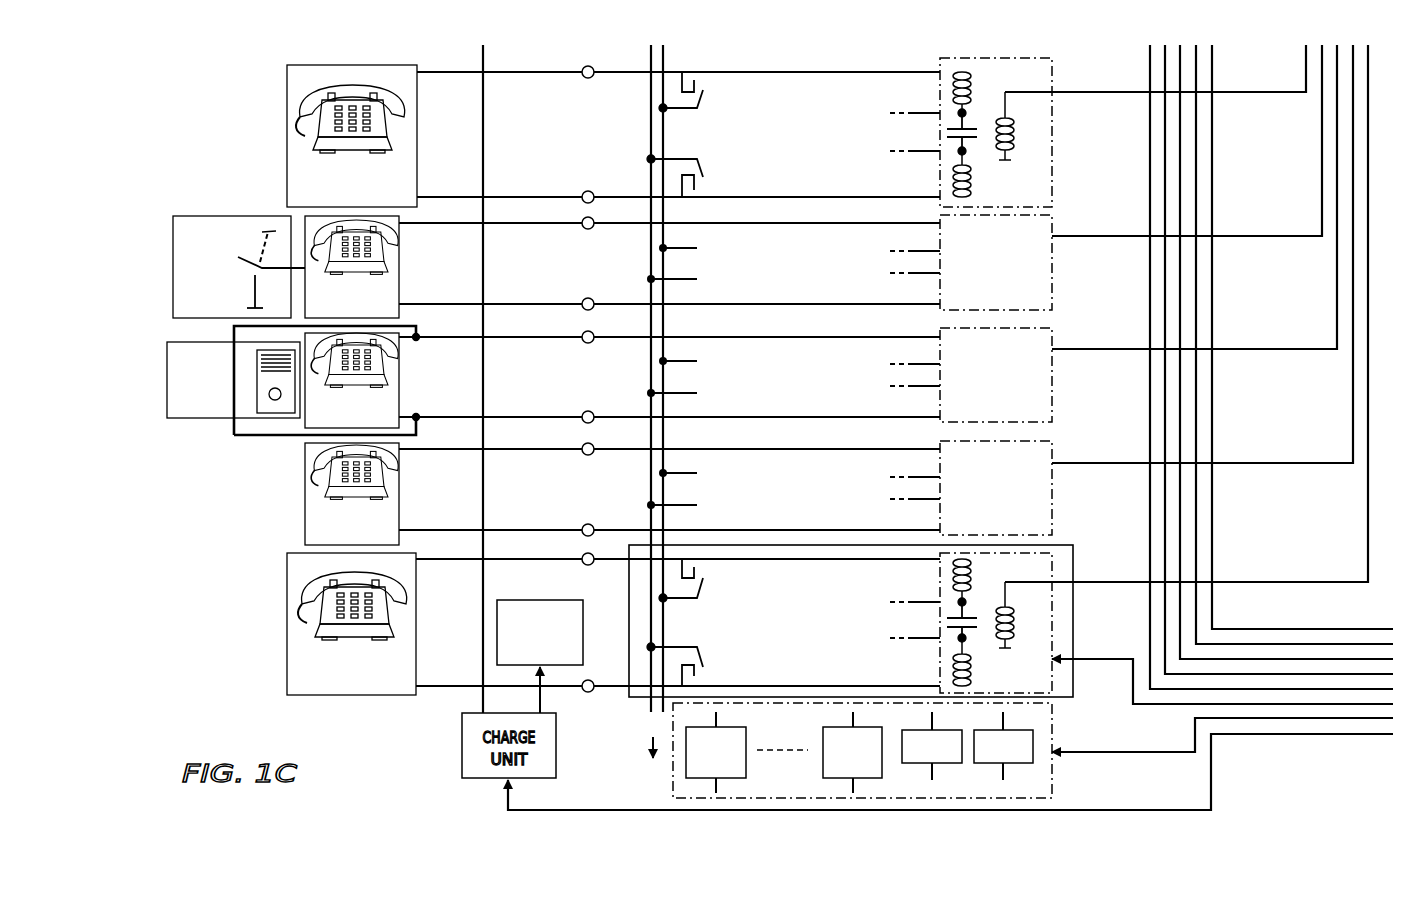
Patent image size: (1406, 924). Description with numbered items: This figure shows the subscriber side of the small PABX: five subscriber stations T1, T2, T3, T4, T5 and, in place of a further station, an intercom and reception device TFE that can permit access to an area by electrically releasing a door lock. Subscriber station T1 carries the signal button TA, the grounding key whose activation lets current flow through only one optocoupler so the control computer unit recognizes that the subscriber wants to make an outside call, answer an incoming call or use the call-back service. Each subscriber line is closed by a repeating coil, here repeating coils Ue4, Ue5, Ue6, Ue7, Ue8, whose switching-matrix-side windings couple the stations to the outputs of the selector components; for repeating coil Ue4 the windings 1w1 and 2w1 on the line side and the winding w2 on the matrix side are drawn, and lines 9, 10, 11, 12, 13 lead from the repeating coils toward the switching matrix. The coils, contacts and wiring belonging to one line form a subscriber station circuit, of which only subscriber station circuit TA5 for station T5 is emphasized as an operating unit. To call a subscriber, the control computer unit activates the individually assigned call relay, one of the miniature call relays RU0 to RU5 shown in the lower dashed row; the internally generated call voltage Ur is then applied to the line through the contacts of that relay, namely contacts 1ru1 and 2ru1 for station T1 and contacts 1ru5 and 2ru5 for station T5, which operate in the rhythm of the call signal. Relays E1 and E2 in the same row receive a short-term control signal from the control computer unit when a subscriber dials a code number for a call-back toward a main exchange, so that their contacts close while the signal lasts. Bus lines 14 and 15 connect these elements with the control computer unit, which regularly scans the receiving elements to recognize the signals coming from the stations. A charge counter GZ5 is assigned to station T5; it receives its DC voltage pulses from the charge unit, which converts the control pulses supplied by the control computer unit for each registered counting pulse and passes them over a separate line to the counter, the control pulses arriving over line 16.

The subscriber station T1 is at (417, 118).
The subscriber station T2 is at (399, 255).
The subscriber station T3 is at (399, 365).
The subscriber station T4 is at (399, 480).
The subscriber station T5 is at (417, 607).
The signal button TA is at (210, 216).
The intercom and reception device TFE is at (200, 418).
The subscriber station circuit TA5 is at (629, 593).
The charge counter GZ5 is at (518, 600).
The call relay contact 1ru1 is at (703, 92).
The call relay contact 2ru1 is at (697, 176).
The call relay contact 1ru5 is at (703, 580).
The call relay contact 2ru5 is at (697, 664).
The call voltage Ur is at (655, 738).
The repeating coil Ue4 is at (971, 132).
The repeating coil Ue5 is at (971, 262).
The repeating coil Ue6 is at (971, 375).
The repeating coil Ue7 is at (971, 488).
The repeating coil Ue8 is at (971, 623).
The transformer winding 1w1 is at (979, 92).
The transformer winding 2w1 is at (979, 174).
The transformer winding w2 is at (1018, 126).
The line 9 is at (1155, 69).
The line 10 is at (1187, 140).
The line 11 is at (1194, 198).
The line 12 is at (1202, 254).
The line 13 is at (1186, 313).
The bus line 14 is at (1222, 670).
The bus line 15 is at (1222, 735).
The control line 16 is at (938, 772).
The call relay RU0 is at (746, 763).
The call relay RU5 is at (882, 763).
The relay E1 is at (918, 730).
The relay E2 is at (999, 730).